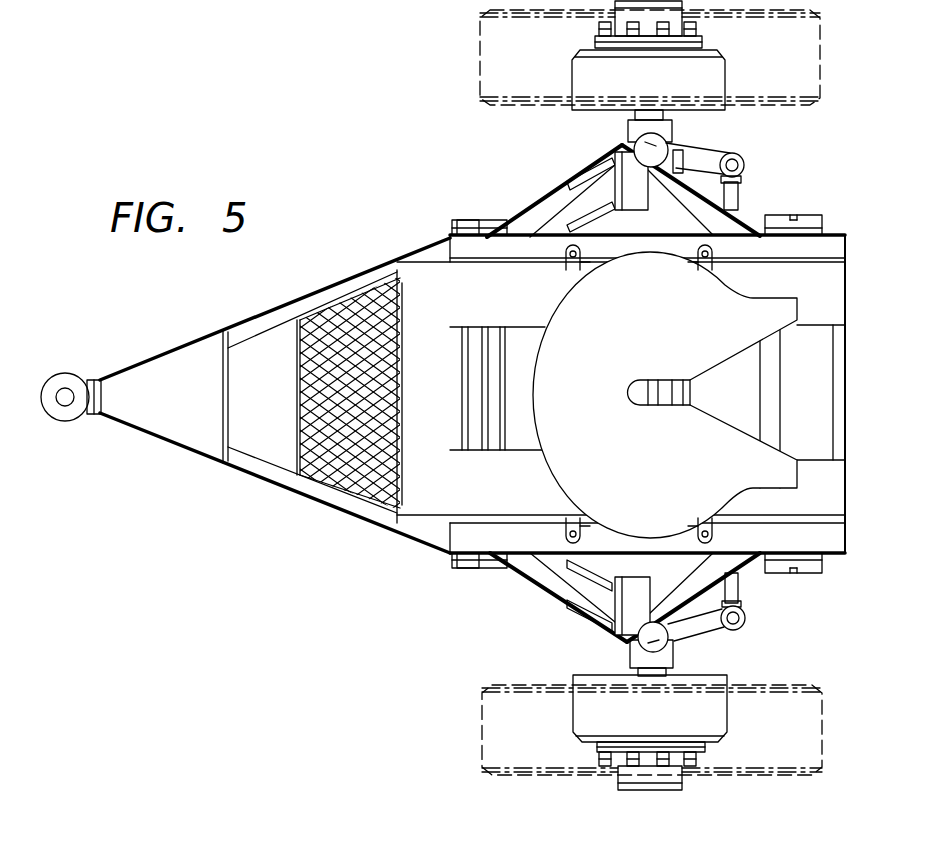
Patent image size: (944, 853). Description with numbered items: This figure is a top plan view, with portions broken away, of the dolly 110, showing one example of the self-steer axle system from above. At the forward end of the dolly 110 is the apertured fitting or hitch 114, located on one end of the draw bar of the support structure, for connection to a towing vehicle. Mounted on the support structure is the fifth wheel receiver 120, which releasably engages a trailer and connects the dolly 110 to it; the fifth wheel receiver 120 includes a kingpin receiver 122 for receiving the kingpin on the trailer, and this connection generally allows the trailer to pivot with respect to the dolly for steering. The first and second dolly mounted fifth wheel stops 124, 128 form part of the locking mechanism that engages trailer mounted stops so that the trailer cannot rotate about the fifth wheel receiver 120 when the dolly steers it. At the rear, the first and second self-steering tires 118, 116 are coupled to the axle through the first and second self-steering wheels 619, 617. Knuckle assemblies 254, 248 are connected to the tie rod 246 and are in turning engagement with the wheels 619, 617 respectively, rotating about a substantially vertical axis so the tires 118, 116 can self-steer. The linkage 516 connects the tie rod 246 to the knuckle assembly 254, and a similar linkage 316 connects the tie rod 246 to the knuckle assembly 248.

The dolly 110 is at (224, 508).
The hitch 114 is at (63, 373).
The second self-steering tire 116 is at (482, 759).
The first self-steering tire 118 is at (480, 38).
The fifth wheel receiver 120 is at (556, 311).
The kingpin receiver 122 is at (651, 385).
The first dolly mounted fifth wheel stop 124 is at (612, 623).
The second dolly mounted fifth wheel stop 128 is at (612, 161).
The tie rod 246 is at (740, 199).
The knuckle assembly 248 is at (668, 644).
The knuckle assembly 254 is at (668, 153).
The linkage 316 is at (736, 631).
The linkage 516 is at (737, 153).
The second self-steering wheel 617 is at (572, 718).
The first self-steering wheel 619 is at (572, 72).